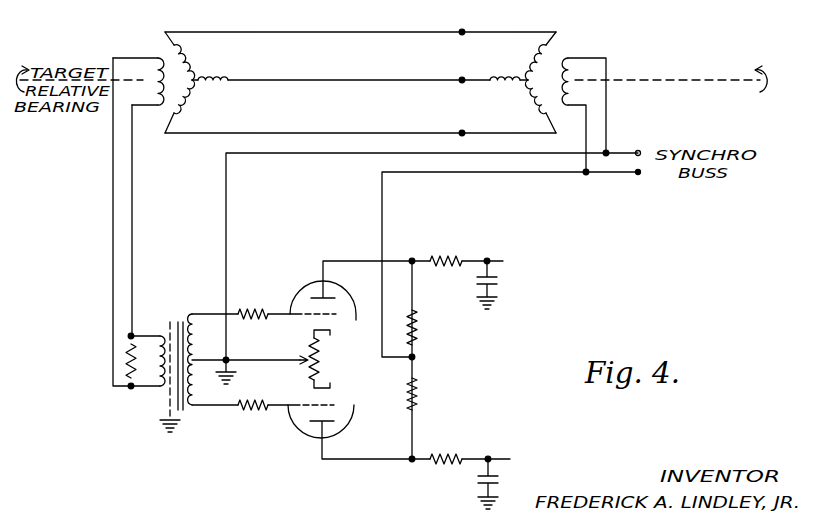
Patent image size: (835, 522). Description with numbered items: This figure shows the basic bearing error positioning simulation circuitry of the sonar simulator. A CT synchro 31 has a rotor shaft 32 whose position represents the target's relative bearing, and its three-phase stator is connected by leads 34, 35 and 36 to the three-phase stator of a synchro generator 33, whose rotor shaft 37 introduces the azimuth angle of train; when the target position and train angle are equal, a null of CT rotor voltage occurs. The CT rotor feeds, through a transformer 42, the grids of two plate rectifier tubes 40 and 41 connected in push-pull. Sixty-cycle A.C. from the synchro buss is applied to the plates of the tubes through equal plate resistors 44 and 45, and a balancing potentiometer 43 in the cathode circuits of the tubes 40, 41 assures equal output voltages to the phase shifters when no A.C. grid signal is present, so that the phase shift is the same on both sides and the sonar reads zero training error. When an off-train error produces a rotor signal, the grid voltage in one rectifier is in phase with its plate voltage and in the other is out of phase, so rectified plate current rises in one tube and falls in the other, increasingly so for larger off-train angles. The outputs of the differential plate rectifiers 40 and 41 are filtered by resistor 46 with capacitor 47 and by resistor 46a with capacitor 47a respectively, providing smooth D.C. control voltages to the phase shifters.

The CT synchro 31 is at (229, 79).
The rotor shaft 32 is at (142, 80).
The synchro generator 33 is at (566, 58).
The lead 34 is at (400, 32).
The lead 35 is at (407, 80).
The lead 36 is at (406, 133).
The rotor shaft 37 is at (737, 80).
The plate rectifier tube 40 is at (300, 284).
The plate rectifier tube 41 is at (302, 430).
The transformer 42 is at (190, 410).
The balancing potentiometer 43 is at (324, 360).
The plate resistor 44 is at (418, 330).
The plate resistor 45 is at (420, 388).
The resistor 46 is at (447, 256).
The resistor 46a is at (452, 458).
The capacitor 47 is at (498, 283).
The capacitor 47a is at (473, 485).